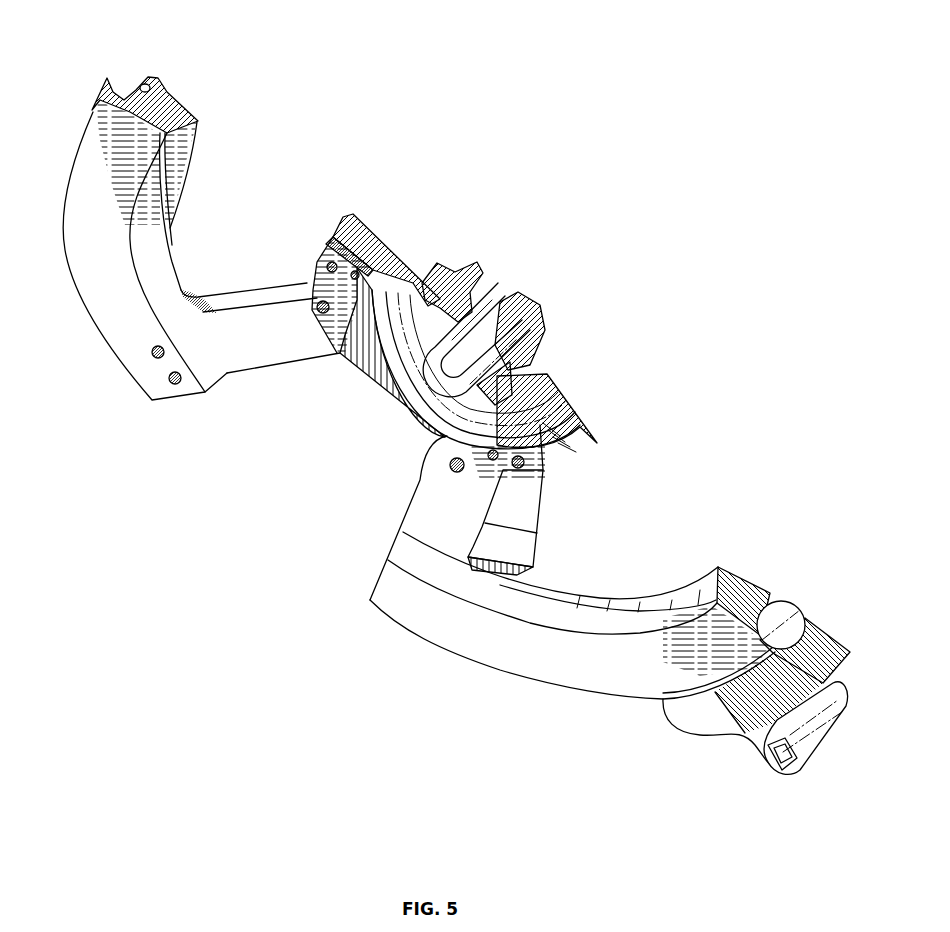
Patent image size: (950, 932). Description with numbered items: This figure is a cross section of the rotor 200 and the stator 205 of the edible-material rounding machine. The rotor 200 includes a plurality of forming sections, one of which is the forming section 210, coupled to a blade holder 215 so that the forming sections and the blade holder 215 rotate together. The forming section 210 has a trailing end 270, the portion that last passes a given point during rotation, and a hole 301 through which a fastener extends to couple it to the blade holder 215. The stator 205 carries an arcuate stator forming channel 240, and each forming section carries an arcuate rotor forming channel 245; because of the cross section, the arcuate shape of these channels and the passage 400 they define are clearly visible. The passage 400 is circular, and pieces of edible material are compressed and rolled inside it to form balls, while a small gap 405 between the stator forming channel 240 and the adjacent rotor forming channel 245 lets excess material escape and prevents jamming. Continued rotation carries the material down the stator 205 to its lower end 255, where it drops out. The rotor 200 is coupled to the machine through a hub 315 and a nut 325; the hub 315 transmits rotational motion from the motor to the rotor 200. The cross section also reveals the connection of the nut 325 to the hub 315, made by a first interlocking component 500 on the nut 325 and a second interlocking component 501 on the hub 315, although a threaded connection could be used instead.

The rotor 200 is at (428, 658).
The stator 205 is at (748, 760).
The forming section 210 is at (112, 133).
The blade holder 215 is at (392, 255).
The stator forming channel 240 is at (782, 617).
The rotor forming channel 245 is at (138, 85).
The lower end 255 is at (710, 718).
The trailing end 270 is at (138, 343).
The hole 301 is at (312, 292).
The hub 315 is at (447, 265).
The nut 325 is at (410, 340).
The passage 400 is at (785, 630).
The gap 405 is at (772, 600).
The first interlocking component 500 is at (533, 355).
The second interlocking component 501 is at (492, 325).